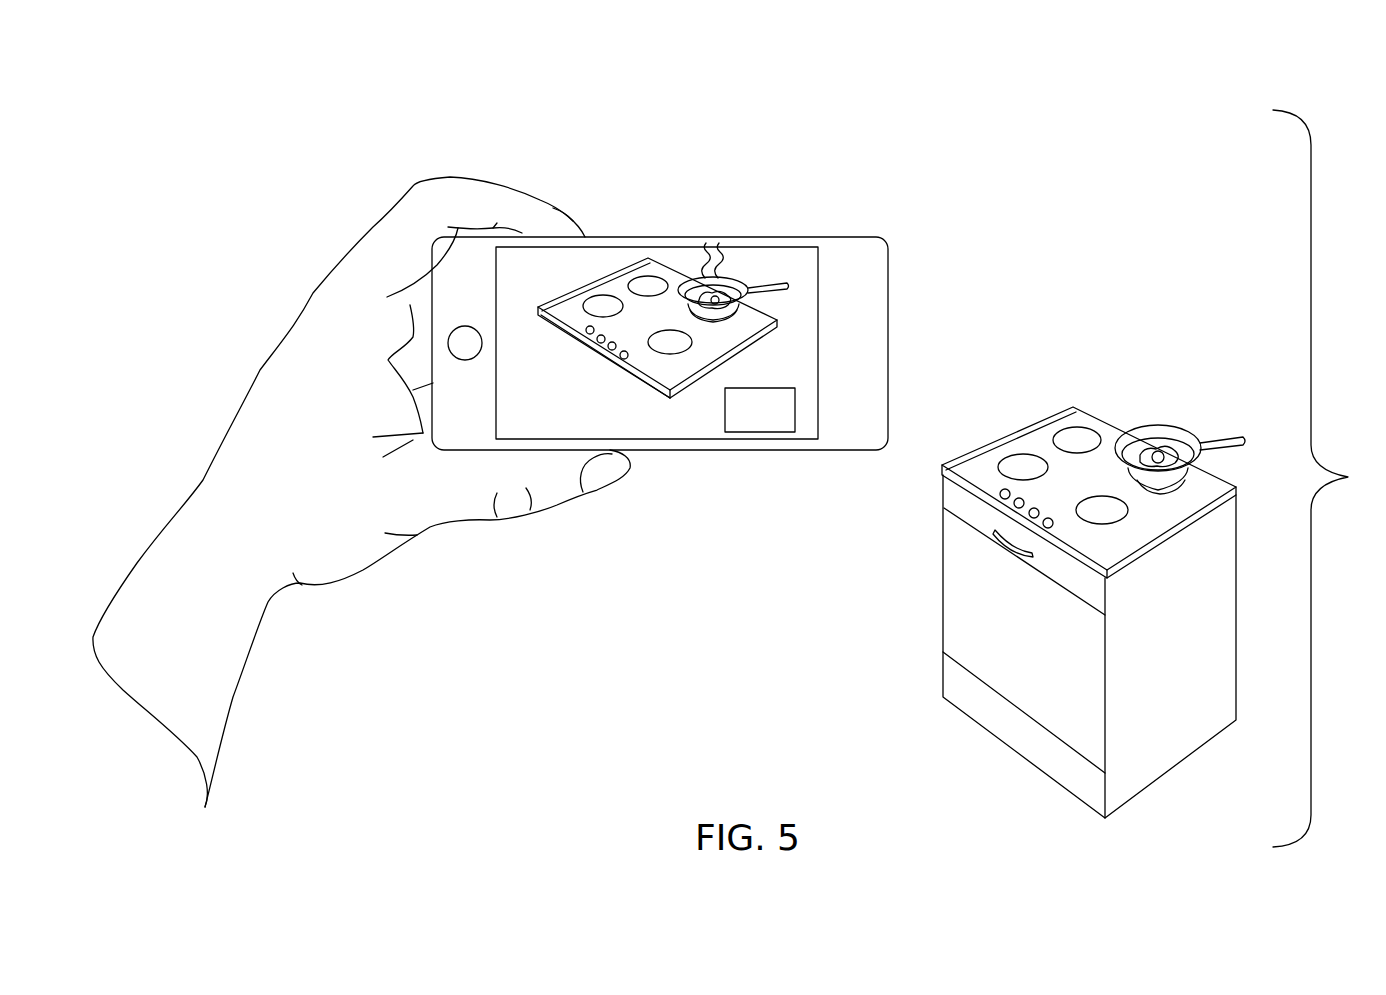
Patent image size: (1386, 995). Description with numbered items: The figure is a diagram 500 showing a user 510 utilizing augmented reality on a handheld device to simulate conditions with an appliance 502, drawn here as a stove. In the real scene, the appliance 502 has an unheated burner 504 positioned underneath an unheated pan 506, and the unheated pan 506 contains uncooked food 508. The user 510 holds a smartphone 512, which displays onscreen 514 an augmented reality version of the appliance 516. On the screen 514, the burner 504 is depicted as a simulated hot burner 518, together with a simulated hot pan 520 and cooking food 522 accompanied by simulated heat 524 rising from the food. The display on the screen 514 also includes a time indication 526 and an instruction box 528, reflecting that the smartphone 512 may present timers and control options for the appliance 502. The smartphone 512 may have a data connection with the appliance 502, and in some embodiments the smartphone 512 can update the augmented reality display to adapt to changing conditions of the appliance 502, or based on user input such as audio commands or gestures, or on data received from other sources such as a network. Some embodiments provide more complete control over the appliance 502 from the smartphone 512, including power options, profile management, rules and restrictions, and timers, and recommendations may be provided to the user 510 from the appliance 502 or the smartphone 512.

The diagram 500 is at (212, 162).
The appliance 502 is at (963, 602).
The unheated burner 504 is at (1163, 493).
The unheated pan 506 is at (1187, 430).
The uncooked food 508 is at (1157, 453).
The user 510 is at (473, 190).
The smartphone 512 is at (873, 236).
The screen 514 is at (793, 267).
The augmented reality version of the appliance 516 is at (712, 327).
The simulated hot burner 518 is at (732, 320).
The simulated hot pan 520 is at (733, 278).
The cooking food 522 is at (698, 293).
The simulated heat 524 is at (718, 260).
The time indicator text 526 is at (593, 430).
The instruction box 528 is at (758, 432).